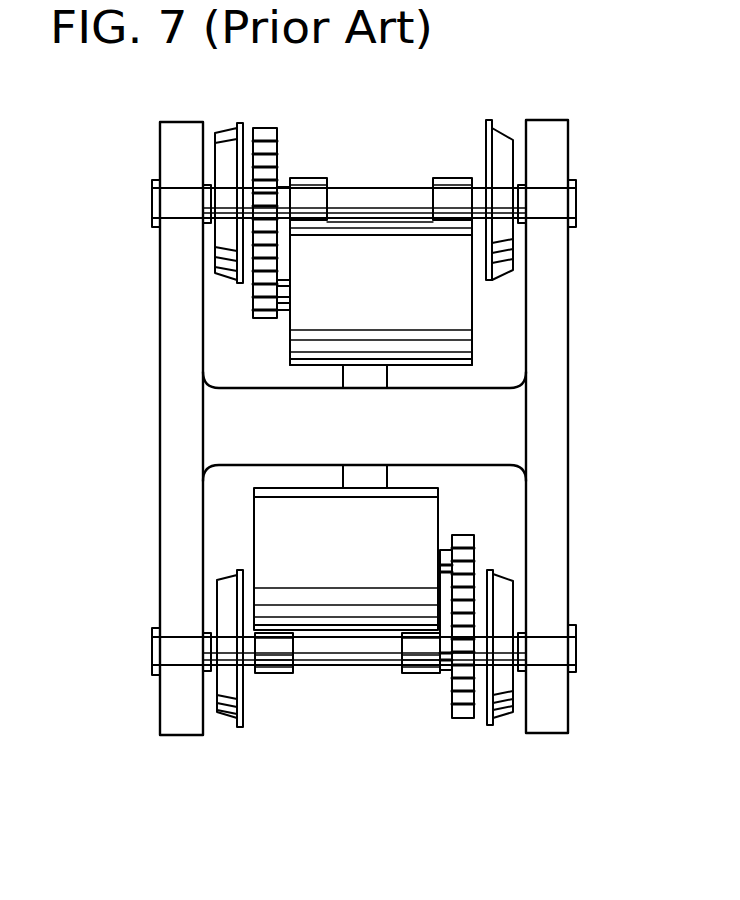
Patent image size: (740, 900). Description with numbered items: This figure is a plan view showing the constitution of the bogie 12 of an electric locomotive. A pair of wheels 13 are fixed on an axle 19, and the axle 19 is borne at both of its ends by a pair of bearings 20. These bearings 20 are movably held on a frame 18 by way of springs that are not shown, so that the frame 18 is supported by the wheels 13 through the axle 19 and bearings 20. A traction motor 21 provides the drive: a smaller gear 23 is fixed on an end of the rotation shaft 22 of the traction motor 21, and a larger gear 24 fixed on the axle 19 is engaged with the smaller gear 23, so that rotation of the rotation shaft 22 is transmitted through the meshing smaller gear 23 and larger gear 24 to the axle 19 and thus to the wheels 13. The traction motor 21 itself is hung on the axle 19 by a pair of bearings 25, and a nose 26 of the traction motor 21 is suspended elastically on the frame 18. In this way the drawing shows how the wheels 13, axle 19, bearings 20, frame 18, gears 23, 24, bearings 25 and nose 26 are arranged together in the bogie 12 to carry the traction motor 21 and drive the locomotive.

The bogie 12 is at (147, 146).
The frame 18 is at (559, 339).
The wheels 13 is at (228, 724).
The axle 19 is at (445, 667).
The bearings 20 is at (151, 650).
The traction motor 21 is at (428, 512).
The rotation shaft 22 is at (442, 542).
The smaller gear 23 is at (474, 545).
The larger gear 24 is at (462, 720).
The bearings 25 is at (417, 673).
The nose 26 is at (383, 463).